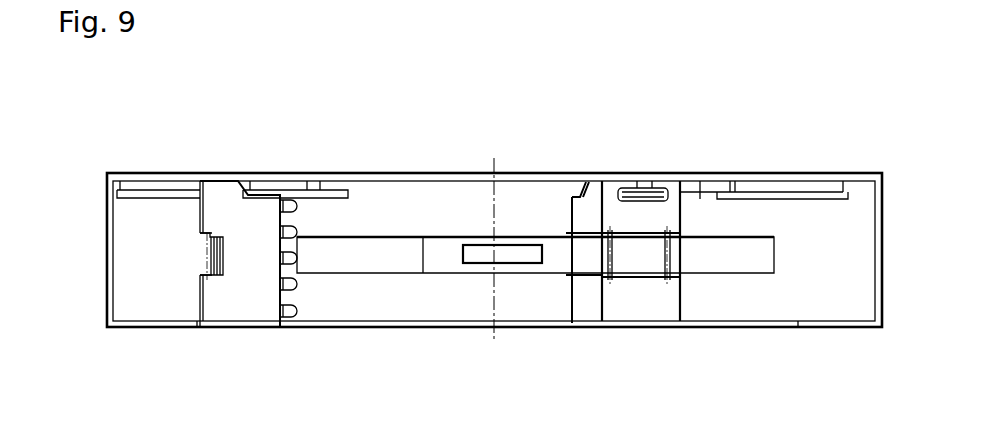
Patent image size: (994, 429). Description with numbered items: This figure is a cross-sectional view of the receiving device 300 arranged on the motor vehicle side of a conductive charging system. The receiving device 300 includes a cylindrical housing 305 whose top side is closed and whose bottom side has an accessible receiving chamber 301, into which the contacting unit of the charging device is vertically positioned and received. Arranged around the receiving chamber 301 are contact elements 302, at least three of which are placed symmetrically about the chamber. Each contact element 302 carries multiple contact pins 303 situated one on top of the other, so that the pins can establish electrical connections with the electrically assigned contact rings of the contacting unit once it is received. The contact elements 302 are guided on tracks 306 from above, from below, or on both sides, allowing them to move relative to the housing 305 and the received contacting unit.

The receiving device 300 is at (600, 135).
The receiving chamber 301 is at (425, 280).
The contact element 302 is at (226, 218).
The contact pin 303 is at (292, 260).
The cylindrical housing 305 is at (774, 173).
The track 306 is at (298, 190).